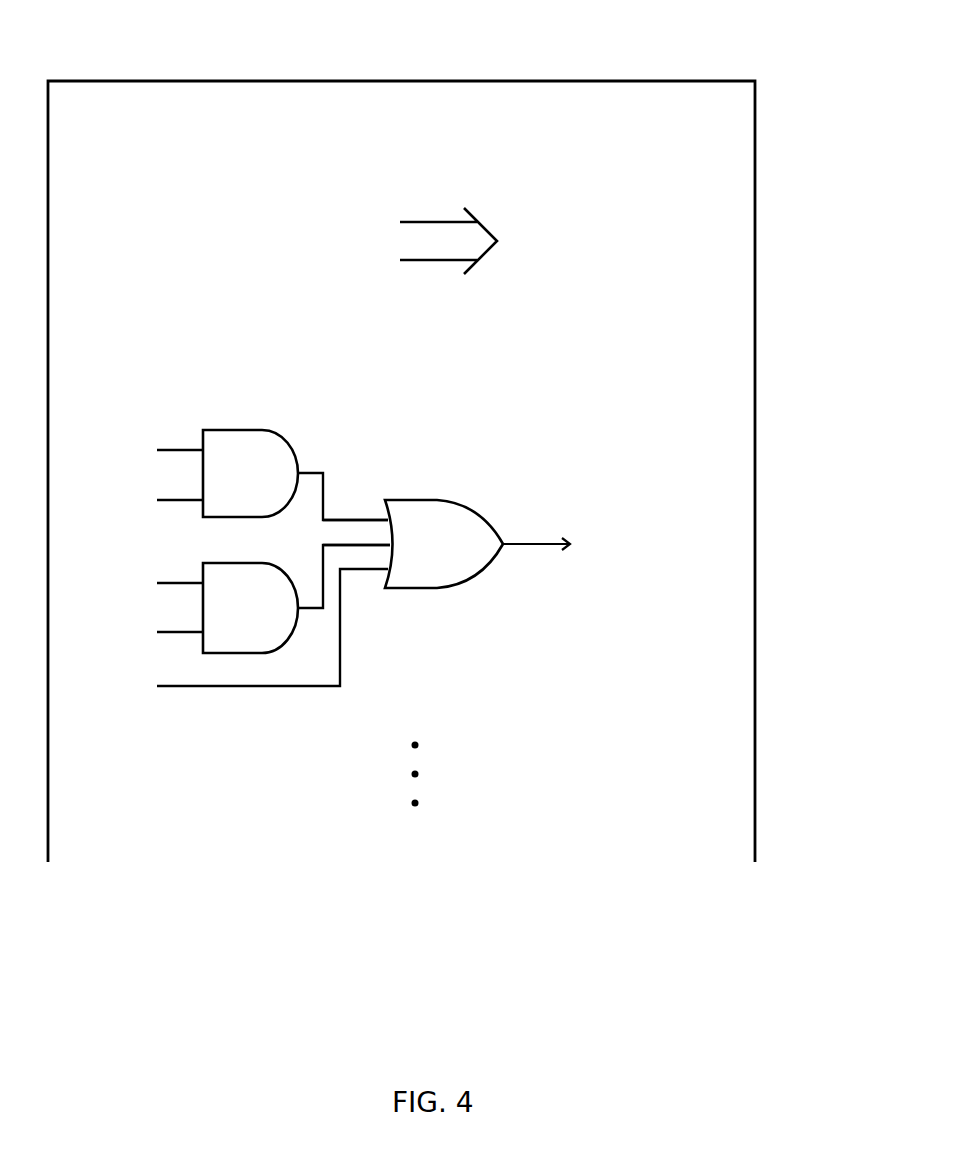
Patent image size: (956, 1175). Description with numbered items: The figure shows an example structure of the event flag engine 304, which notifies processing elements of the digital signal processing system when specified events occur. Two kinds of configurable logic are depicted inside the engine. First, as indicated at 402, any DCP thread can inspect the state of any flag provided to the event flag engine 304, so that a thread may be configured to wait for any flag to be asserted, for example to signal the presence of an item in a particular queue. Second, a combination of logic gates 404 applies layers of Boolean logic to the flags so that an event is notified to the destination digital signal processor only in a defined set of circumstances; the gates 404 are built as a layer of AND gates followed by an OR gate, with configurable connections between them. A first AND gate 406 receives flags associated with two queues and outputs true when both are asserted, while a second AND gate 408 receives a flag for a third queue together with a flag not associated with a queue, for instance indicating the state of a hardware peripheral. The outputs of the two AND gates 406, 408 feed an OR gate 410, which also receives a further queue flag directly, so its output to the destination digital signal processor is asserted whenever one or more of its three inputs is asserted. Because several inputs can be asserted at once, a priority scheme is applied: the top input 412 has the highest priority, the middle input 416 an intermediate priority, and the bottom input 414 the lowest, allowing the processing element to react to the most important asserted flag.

The event flag engine 304 is at (584, 81).
The flag inspection by DCP threads 402 is at (728, 240).
The combination of logic gates 404 is at (728, 546).
The first AND gate 406 is at (267, 430).
The second AND gate 408 is at (262, 563).
The OR gate 410 is at (455, 500).
The top input 412 is at (342, 520).
The bottom input 414 is at (375, 570).
The middle input 416 is at (348, 546).